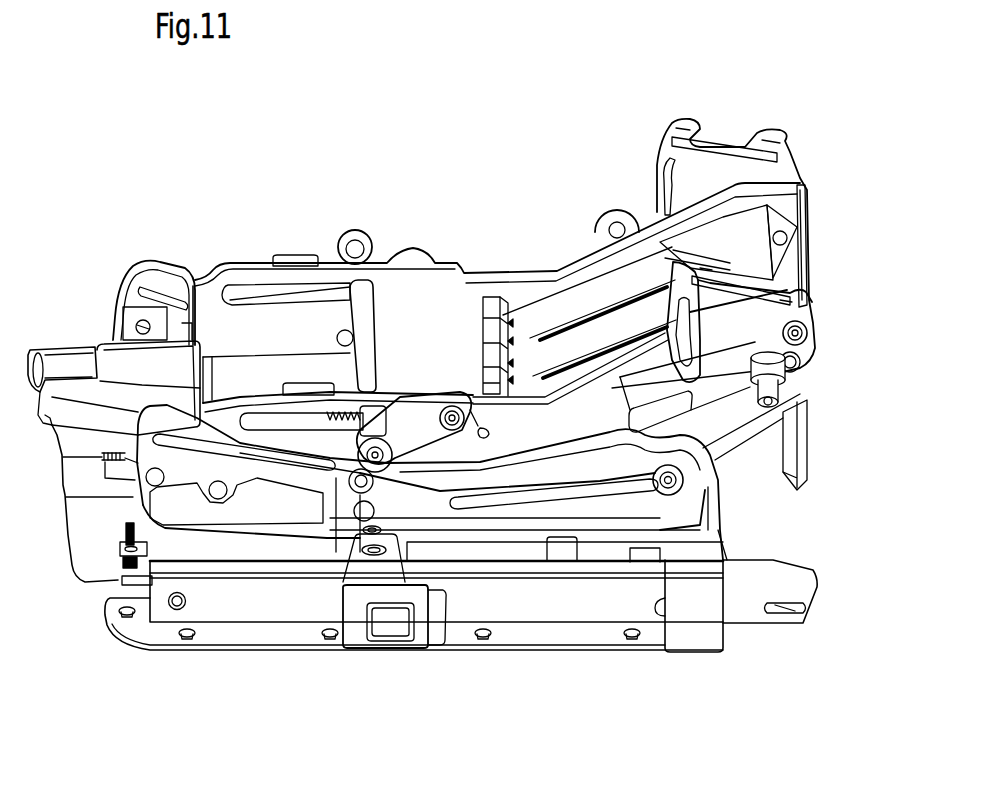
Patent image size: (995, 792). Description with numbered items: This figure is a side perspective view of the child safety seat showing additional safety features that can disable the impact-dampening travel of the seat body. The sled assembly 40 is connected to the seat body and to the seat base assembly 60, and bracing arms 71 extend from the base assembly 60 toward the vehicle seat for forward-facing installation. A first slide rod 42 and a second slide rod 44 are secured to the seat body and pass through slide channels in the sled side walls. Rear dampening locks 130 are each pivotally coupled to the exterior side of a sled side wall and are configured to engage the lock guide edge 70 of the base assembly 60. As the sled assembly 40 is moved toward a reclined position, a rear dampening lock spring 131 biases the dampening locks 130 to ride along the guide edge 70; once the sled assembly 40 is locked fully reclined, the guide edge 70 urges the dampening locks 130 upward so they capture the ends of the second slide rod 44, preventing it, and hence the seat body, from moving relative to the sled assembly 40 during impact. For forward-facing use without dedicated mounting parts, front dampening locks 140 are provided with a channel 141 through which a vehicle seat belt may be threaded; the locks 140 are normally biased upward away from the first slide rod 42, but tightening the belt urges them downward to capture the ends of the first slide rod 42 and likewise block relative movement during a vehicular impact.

The sled assembly 40 is at (532, 263).
The first slide rod 42 is at (778, 388).
The second slide rod 44 is at (353, 303).
The seat base assembly 60 is at (707, 473).
The lock guide edge 70 is at (335, 455).
The bracing arms 71 is at (824, 602).
The rear dampening locks 130 is at (410, 392).
The rear dampening lock spring 131 is at (488, 445).
The front dampening locks 140 is at (821, 333).
The channel 141 is at (800, 248).